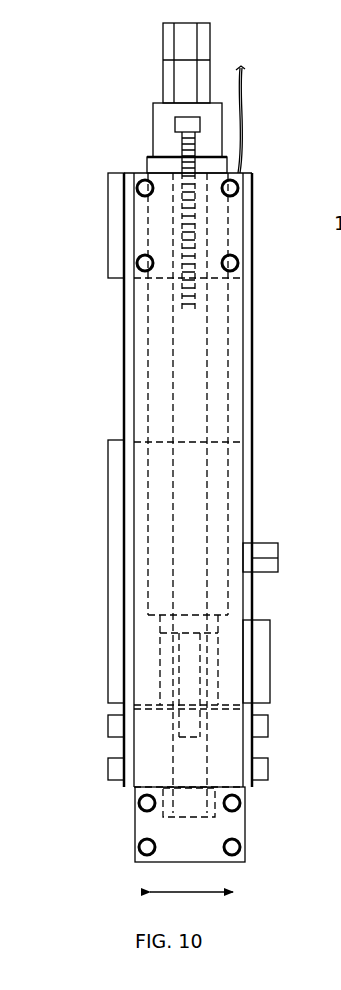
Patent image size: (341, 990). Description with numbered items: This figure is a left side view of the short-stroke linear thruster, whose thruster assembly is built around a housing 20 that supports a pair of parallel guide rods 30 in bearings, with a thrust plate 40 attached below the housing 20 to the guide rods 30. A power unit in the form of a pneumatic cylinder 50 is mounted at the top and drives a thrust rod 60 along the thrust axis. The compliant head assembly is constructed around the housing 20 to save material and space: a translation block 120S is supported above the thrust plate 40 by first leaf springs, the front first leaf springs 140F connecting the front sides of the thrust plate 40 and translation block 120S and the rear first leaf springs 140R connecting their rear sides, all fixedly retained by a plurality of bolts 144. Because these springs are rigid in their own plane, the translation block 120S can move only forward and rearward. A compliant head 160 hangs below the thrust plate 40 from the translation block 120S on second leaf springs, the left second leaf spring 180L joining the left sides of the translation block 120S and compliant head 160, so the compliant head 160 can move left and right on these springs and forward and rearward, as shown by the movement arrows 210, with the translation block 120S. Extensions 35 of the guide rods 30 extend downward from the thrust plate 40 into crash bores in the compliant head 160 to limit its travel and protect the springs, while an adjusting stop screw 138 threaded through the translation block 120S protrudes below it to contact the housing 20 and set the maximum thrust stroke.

The adjusting stop screw 138 is at (175, 124).
The pneumatic cylinder 50 is at (158, 166).
The translation block 120S is at (96, 232).
The rear first leaf springs 140R is at (123, 330).
The front first leaf springs 140F is at (252, 410).
The housing 20 is at (106, 408).
The left second leaf spring 180L is at (142, 516).
The bolts 144 is at (243, 272).
The thrust rod 60 is at (188, 657).
The guide rods 30 is at (185, 740).
The thrust plate 40 is at (253, 748).
The compliant head 160 is at (135, 828).
The extensions of guide rods 35 is at (195, 805).
The movement arrows 210 is at (200, 892).